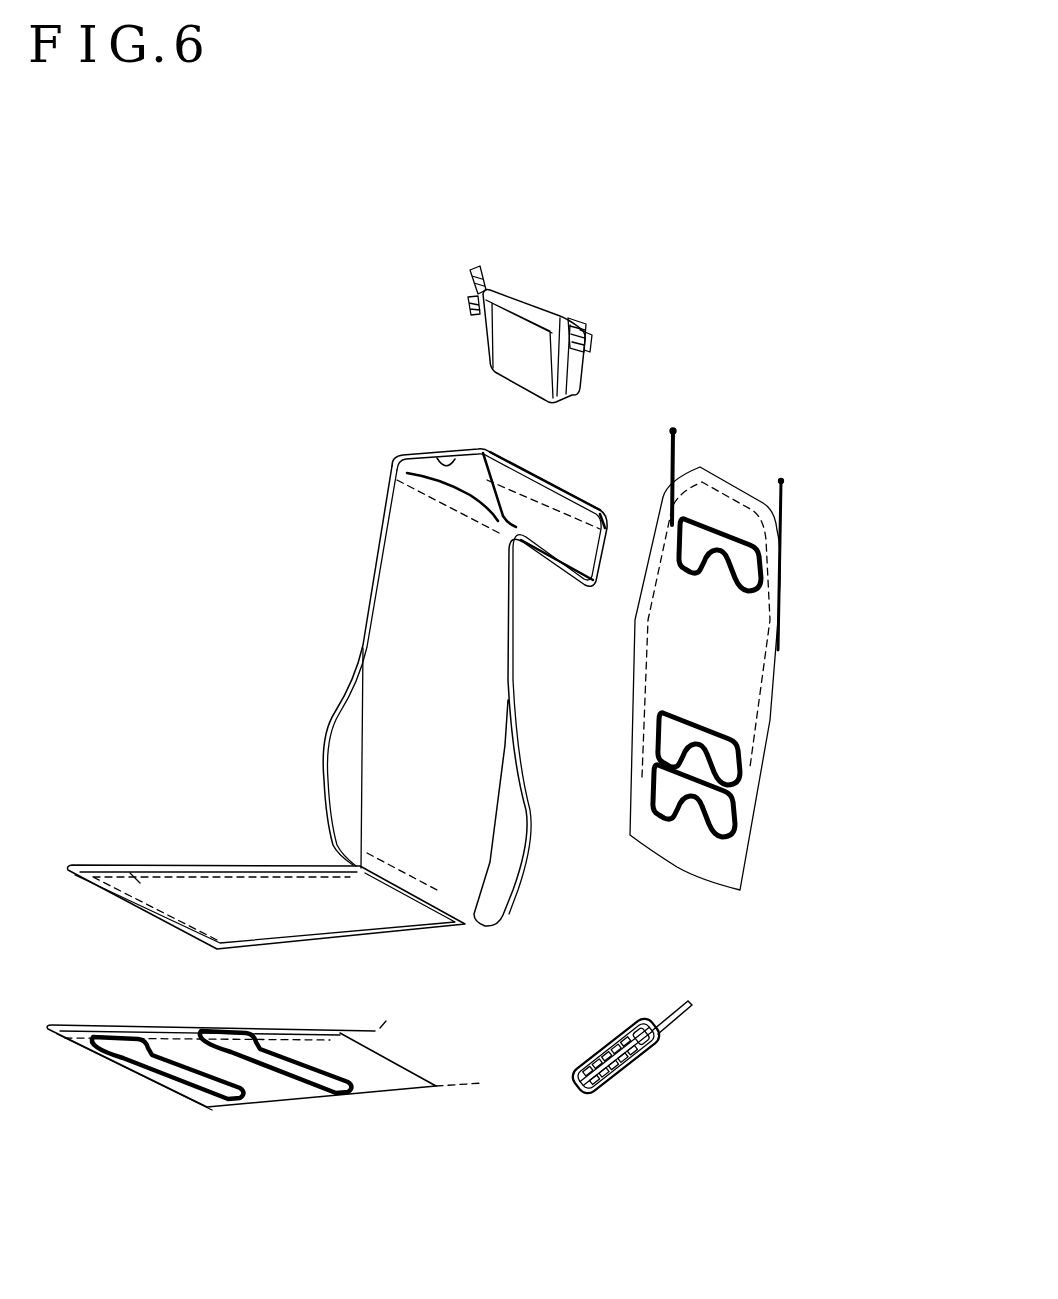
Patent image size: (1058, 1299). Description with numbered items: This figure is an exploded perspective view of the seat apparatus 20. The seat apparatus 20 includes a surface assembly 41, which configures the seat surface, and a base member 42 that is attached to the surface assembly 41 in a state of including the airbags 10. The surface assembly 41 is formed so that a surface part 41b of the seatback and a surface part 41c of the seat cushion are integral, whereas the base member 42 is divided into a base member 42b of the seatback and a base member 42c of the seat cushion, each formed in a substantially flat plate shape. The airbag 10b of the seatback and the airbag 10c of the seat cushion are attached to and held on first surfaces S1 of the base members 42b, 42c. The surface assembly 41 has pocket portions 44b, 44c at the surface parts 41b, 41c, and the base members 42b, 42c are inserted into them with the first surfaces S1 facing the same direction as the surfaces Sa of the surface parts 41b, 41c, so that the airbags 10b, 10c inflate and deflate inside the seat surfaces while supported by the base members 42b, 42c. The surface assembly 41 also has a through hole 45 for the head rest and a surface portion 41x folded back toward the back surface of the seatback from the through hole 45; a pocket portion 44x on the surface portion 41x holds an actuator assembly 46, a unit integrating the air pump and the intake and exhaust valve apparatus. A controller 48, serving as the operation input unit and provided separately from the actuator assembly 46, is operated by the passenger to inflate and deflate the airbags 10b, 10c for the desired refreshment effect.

The seat apparatus 20 is at (80, 198).
The surface assembly 41 is at (150, 478).
The surface part of the seatback 41b is at (464, 658).
The surface part of the seat cushion 41c is at (282, 895).
The surface portion 41x is at (548, 566).
The base member 42 is at (443, 774).
The base member of the seatback 42b is at (722, 472).
The base member of the seat cushion 42c is at (122, 1082).
The airbags 10 is at (511, 844).
The airbag of the seatback 10b is at (748, 540).
The airbag of the seat cushion 10c is at (228, 1103).
The pocket portion 44x is at (546, 486).
The pocket portion 44b is at (473, 924).
The pocket portion 44c is at (140, 921).
The through hole 45 is at (458, 454).
The actuator assembly 46 is at (546, 304).
The controller 48 is at (648, 1072).
The surface of the surface portion Sa is at (420, 618).
The first surface S1 is at (665, 670).